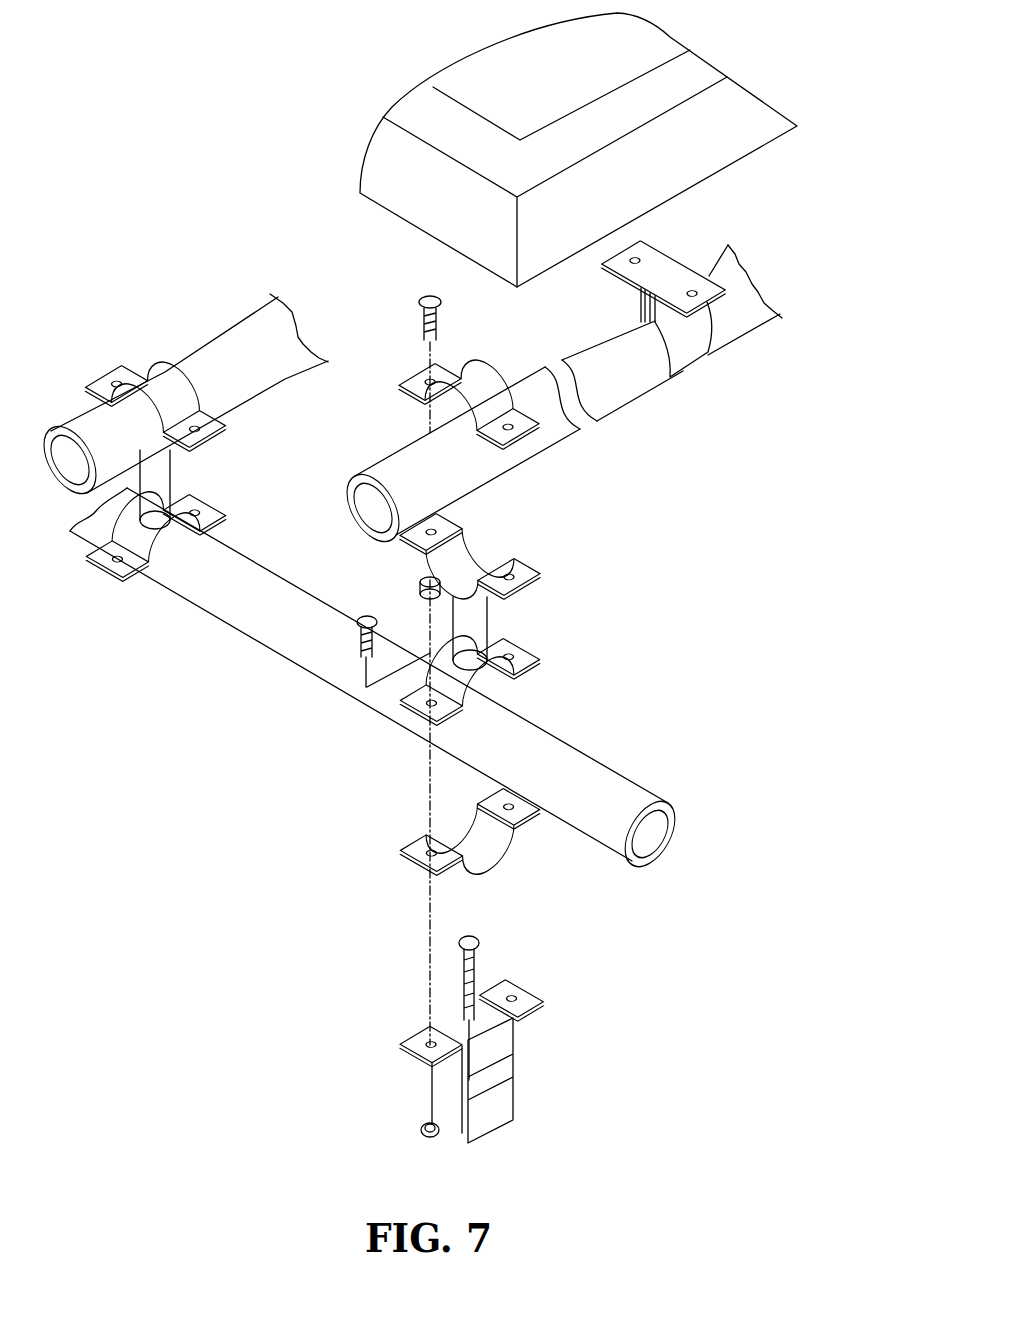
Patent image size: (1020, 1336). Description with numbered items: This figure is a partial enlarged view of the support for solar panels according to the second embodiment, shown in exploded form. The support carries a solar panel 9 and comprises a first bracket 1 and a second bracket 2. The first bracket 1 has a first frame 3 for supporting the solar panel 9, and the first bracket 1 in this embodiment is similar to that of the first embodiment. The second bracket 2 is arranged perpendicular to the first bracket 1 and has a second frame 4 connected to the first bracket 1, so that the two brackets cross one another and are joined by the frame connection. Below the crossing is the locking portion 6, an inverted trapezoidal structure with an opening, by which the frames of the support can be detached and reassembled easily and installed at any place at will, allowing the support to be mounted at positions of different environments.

The first bracket 1 is at (568, 399).
The second bracket 2 is at (383, 683).
The first frame 3 is at (663, 376).
The second frame 4 is at (156, 535).
The locking portion 6 is at (532, 1039).
The solar panel 9 is at (573, 150).